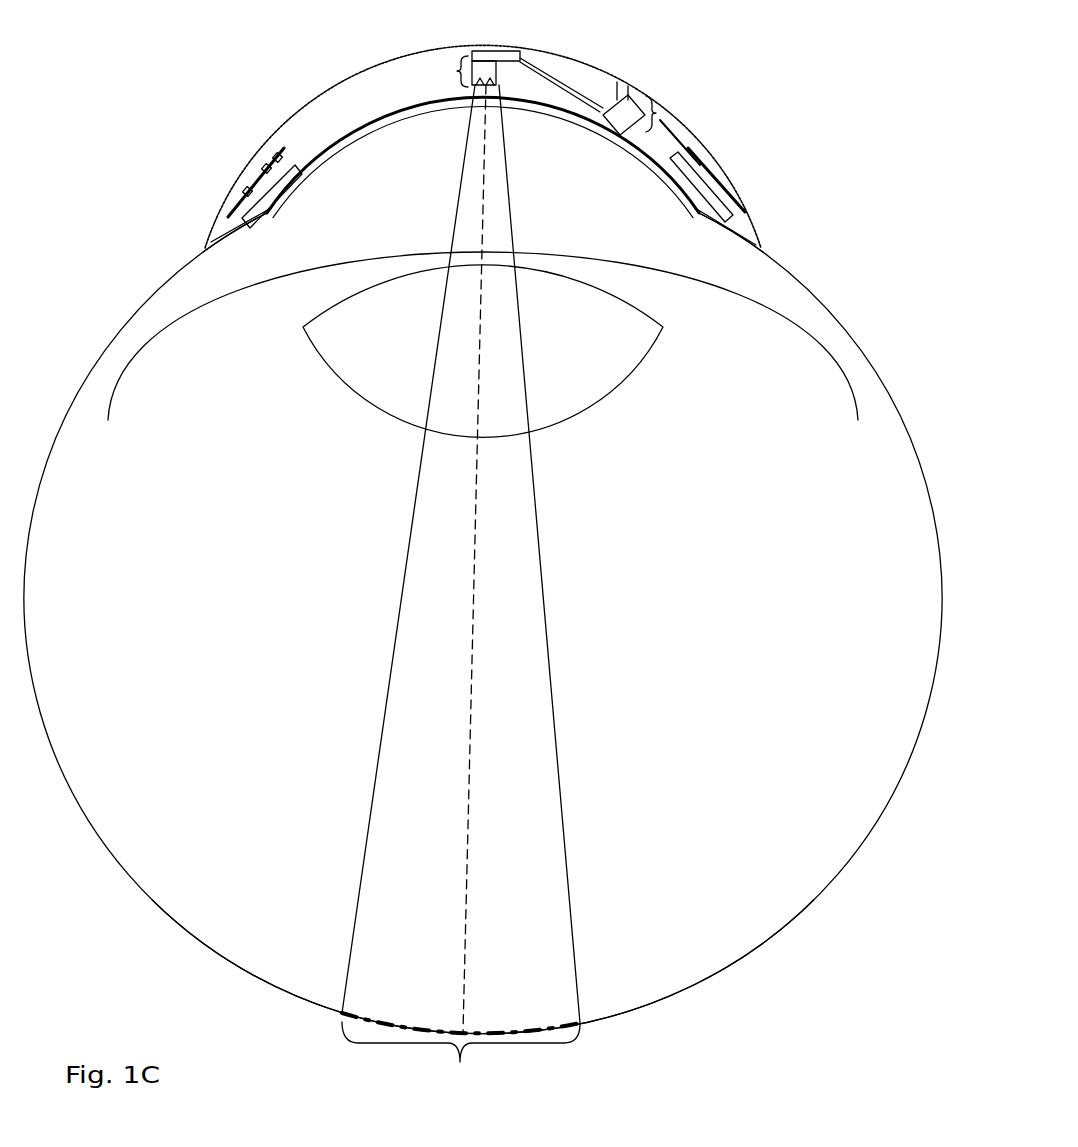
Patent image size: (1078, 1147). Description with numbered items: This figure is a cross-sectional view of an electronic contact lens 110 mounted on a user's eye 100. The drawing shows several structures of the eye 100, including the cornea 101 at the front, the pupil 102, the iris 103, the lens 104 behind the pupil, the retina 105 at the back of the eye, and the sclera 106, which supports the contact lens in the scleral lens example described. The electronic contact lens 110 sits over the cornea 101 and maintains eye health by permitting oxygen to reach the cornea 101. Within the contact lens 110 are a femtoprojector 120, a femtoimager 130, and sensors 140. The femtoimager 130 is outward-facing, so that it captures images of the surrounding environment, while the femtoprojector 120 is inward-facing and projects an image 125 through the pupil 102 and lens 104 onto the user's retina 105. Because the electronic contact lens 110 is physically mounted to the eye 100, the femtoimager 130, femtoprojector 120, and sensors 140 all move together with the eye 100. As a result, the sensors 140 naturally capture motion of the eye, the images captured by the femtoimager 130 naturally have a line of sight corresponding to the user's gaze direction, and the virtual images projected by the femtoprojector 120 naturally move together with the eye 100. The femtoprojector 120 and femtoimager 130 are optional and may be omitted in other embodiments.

The eye 100 is at (740, 505).
The cornea 101 is at (442, 190).
The pupil 102 is at (528, 236).
The iris 103 is at (411, 253).
The lens 104 is at (412, 343).
The retina 105 is at (668, 998).
The sclera 106 is at (722, 229).
The electronic contact lens 110 is at (203, 216).
The femtoprojector 120 is at (457, 71).
The image 125 is at (461, 1055).
The femtoimager 130 is at (658, 113).
The sensors 140 is at (718, 190).